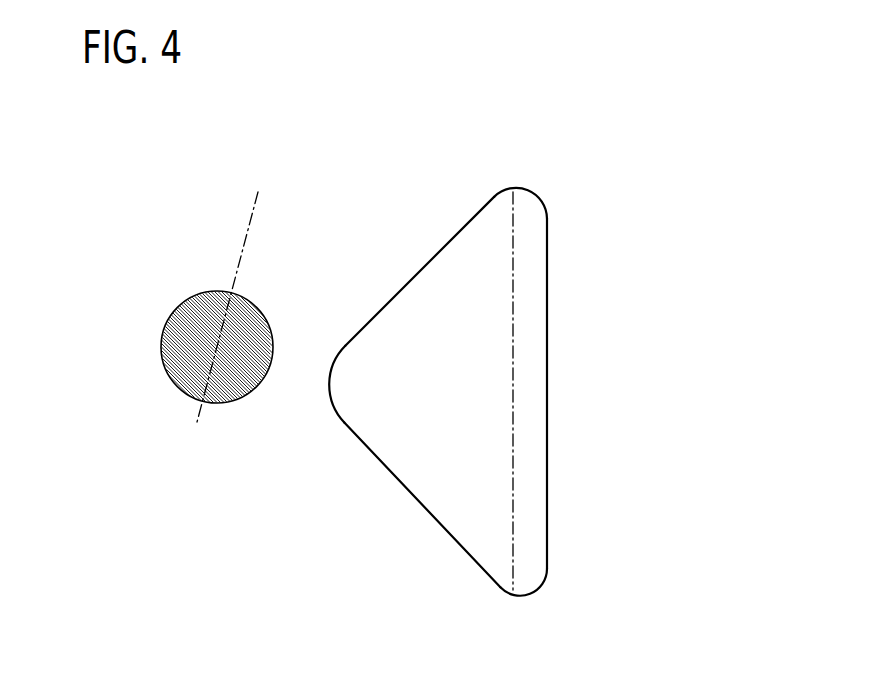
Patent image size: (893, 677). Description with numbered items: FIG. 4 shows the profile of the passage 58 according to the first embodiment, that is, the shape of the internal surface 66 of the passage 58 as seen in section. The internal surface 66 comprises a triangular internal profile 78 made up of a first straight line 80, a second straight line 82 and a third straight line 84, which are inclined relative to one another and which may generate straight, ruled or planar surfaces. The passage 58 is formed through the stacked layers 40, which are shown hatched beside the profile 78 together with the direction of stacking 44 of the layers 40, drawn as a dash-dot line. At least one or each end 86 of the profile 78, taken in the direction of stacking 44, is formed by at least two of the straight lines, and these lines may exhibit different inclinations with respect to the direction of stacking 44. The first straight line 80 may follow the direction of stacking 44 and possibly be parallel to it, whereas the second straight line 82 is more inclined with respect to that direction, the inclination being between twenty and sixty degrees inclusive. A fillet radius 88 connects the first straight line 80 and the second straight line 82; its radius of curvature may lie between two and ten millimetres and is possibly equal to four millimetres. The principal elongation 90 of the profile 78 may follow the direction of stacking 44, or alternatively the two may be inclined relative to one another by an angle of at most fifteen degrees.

The layers 40 is at (158, 333).
The direction of stacking 44 is at (247, 235).
The passage 58 is at (525, 356).
The internal surface 66 is at (316, 508).
The internal profile 78 is at (633, 504).
The first straight line 80 is at (547, 410).
The second straight line 82 is at (408, 283).
The third straight line 84 is at (467, 552).
The end 86 is at (458, 194).
The fillet radius 88 is at (522, 190).
The principal elongation 90 is at (512, 403).